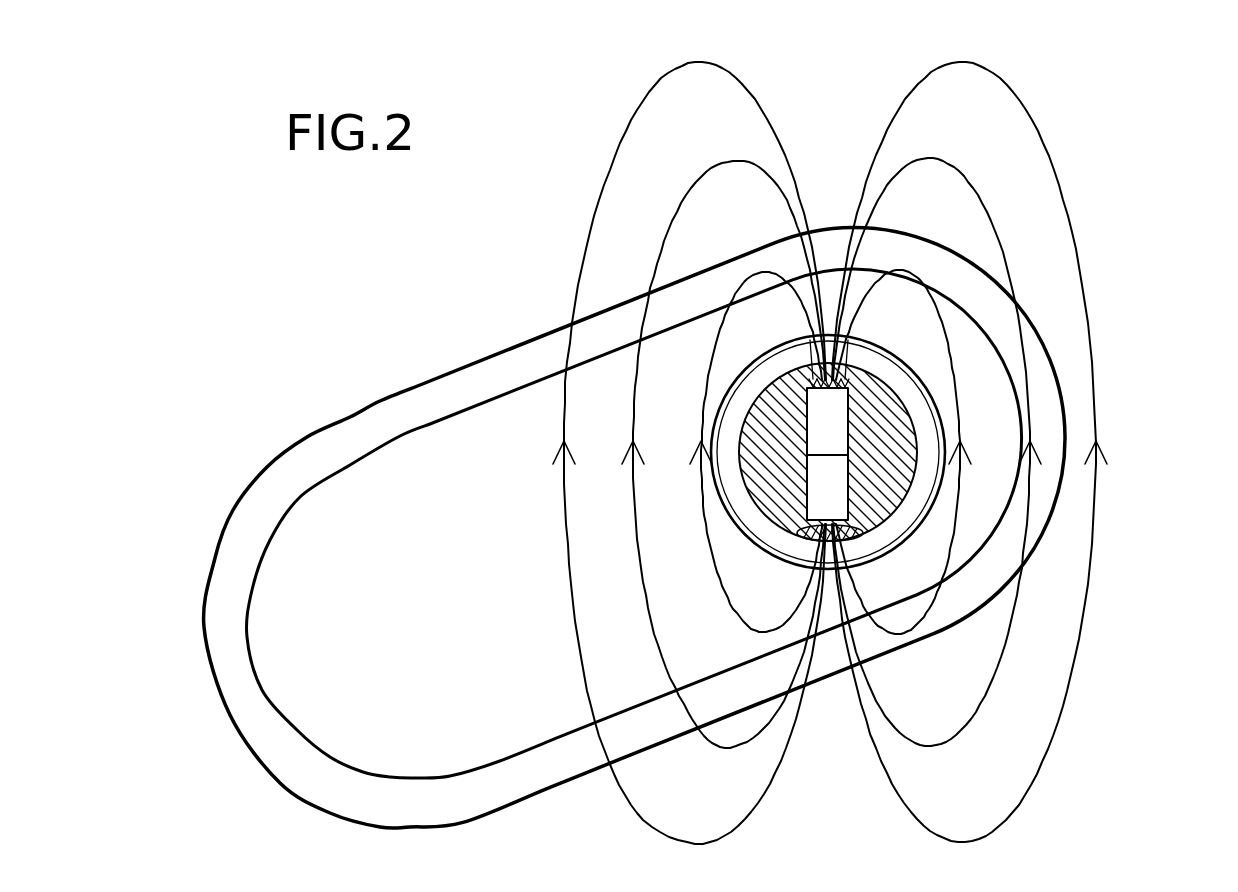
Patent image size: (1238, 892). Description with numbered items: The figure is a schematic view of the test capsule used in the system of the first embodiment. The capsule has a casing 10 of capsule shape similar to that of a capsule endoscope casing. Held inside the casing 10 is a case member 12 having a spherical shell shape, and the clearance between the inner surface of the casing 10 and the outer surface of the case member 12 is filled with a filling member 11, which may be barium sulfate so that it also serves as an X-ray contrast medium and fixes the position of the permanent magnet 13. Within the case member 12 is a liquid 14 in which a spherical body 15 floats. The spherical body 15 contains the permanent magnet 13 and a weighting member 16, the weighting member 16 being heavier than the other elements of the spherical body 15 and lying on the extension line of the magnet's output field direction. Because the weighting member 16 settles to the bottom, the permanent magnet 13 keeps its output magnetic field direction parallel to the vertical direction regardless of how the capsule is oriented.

The casing 10 is at (308, 776).
The filling member 11 is at (446, 711).
The case member 12 is at (927, 397).
The permanent magnet 13 is at (812, 436).
The liquid 14 is at (925, 482).
The spherical body 15 is at (900, 510).
The weighting member 16 is at (860, 533).